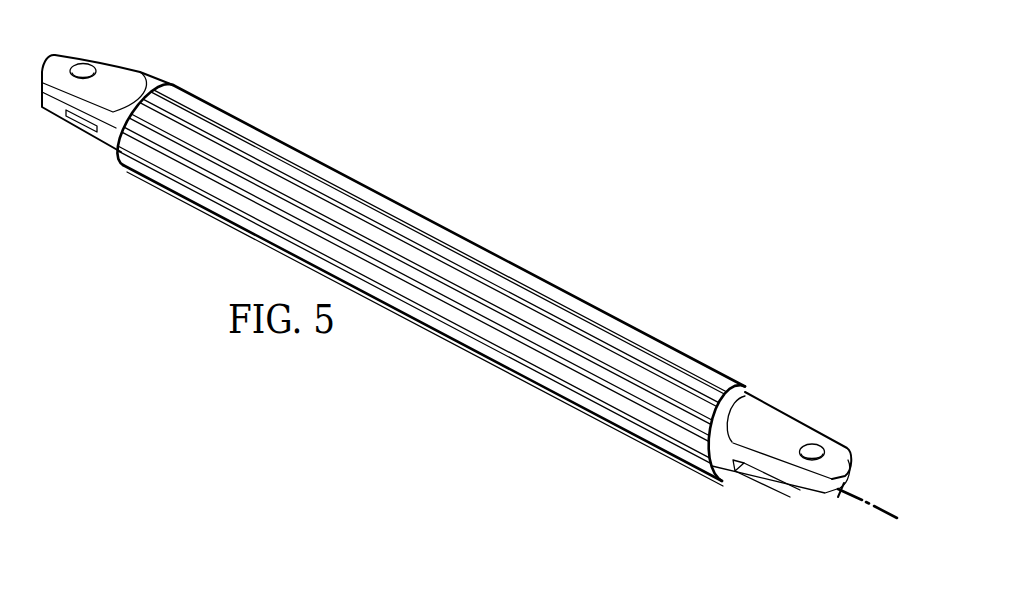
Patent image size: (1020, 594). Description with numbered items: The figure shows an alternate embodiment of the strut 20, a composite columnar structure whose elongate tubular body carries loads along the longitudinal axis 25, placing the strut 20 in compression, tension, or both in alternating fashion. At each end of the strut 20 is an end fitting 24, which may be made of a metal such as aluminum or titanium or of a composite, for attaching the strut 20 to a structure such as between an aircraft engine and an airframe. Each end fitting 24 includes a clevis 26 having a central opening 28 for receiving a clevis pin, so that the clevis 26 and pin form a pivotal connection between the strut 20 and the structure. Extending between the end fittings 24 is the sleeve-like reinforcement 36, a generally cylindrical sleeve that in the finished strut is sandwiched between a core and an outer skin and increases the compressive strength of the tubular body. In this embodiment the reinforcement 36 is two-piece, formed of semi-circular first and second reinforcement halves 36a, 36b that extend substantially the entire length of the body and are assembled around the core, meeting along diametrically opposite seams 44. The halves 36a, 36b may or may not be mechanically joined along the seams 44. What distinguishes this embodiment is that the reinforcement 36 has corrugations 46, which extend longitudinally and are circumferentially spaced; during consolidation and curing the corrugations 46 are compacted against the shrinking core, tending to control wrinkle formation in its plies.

The strut 20 is at (490, 181).
The end fitting 24 is at (84, 152).
The longitudinal axis 25 is at (867, 505).
The clevis 26 is at (72, 60).
The central opening 28 is at (90, 63).
The sleeve-like reinforcement 36 is at (399, 196).
The first reinforcement half 36a is at (590, 304).
The second reinforcement half 36b is at (500, 364).
The seam 44 is at (667, 440).
The corrugations 46 is at (696, 373).